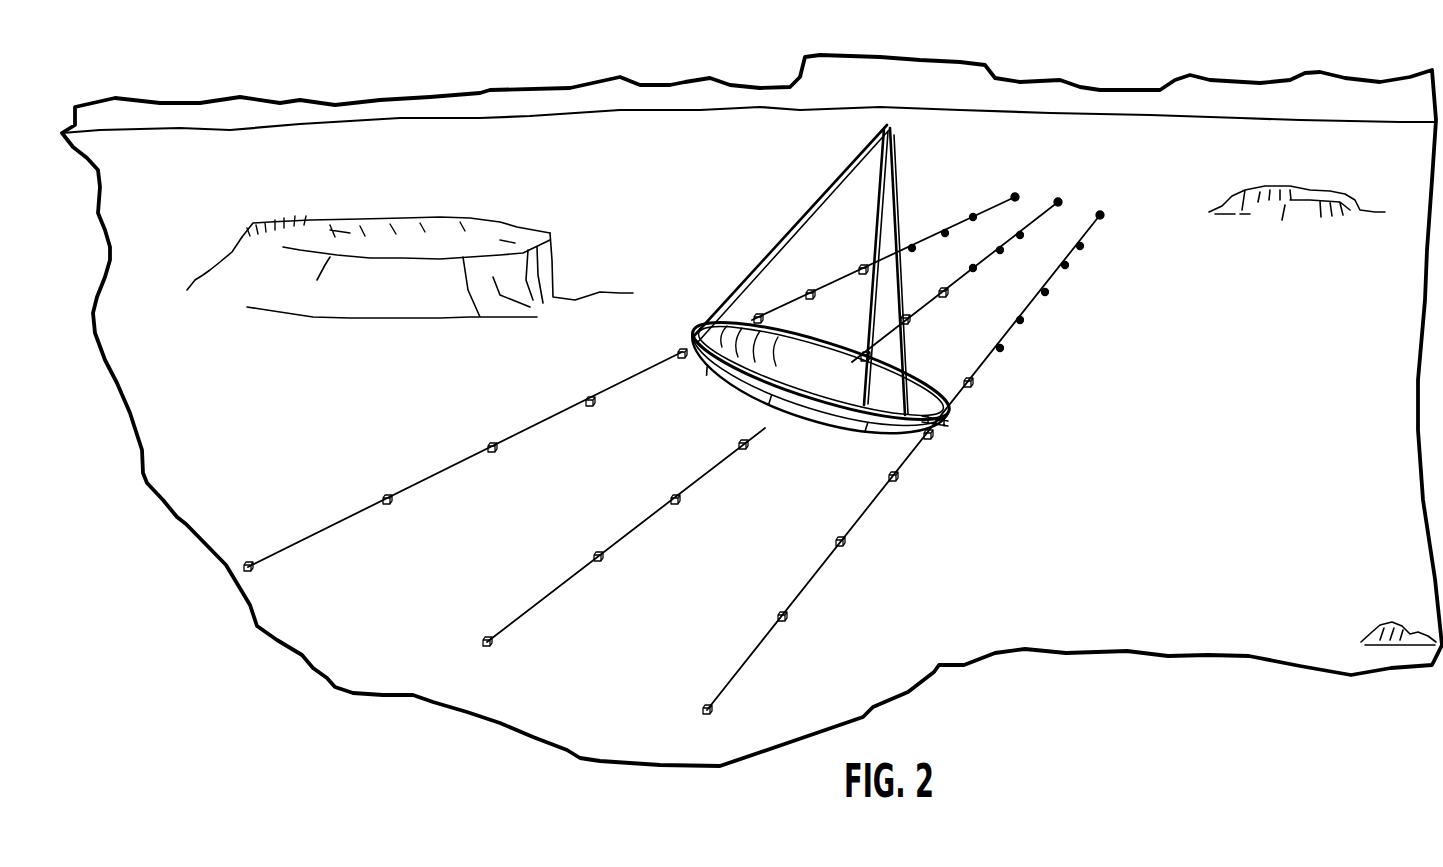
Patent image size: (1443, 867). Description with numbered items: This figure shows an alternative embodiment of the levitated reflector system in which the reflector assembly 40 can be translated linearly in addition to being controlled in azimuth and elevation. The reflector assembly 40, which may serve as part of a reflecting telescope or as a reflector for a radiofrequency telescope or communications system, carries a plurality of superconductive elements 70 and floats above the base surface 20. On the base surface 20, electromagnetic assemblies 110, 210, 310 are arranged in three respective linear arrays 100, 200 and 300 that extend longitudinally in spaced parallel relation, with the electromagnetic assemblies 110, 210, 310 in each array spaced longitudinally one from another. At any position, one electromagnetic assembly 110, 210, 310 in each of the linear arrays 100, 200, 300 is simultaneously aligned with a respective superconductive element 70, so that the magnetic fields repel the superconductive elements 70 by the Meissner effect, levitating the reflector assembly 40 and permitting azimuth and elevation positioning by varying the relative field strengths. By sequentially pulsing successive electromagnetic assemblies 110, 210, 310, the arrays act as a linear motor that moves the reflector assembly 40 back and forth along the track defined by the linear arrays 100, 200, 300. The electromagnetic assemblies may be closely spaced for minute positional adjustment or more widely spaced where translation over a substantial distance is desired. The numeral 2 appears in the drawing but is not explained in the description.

The base surface 20 is at (597, 152).
The electromagnetic reflective assembly 40 is at (683, 320).
The node 2 is at (678, 352).
The superconductive element 70 is at (944, 426).
The linear array 300 is at (428, 490).
The electromagnetic assembly 310 is at (592, 405).
The linear array 200 is at (558, 592).
The electromagnetic assembly 210 is at (748, 447).
The linear array 100 is at (815, 583).
The electromagnetic assembly 110 is at (897, 478).